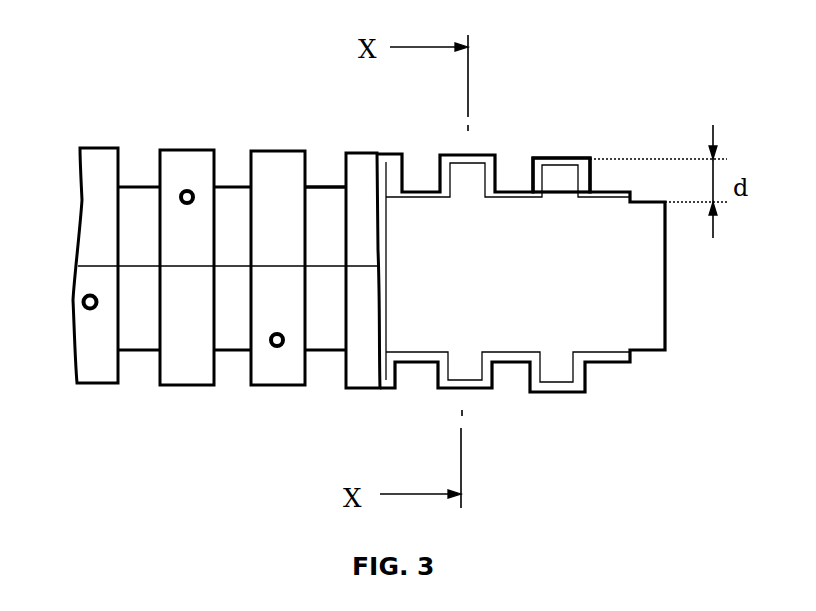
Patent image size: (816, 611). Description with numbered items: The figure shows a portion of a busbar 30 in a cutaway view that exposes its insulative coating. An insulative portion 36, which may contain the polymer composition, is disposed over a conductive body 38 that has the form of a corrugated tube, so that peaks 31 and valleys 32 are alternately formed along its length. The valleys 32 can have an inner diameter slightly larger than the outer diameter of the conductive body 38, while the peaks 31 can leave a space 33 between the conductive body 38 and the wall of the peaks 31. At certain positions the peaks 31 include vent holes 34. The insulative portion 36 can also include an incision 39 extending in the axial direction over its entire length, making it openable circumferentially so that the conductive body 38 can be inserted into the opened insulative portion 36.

The busbar 30 is at (596, 82).
The peaks 31 is at (280, 165).
The valleys 32 is at (324, 205).
The space 33 is at (556, 176).
The vent holes 34 is at (188, 189).
The insulative portion 36 is at (100, 148).
The conductive body 38 is at (518, 280).
The incision 39 is at (100, 258).